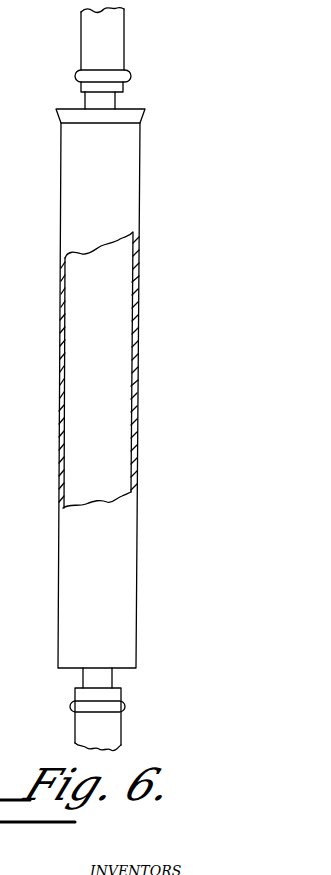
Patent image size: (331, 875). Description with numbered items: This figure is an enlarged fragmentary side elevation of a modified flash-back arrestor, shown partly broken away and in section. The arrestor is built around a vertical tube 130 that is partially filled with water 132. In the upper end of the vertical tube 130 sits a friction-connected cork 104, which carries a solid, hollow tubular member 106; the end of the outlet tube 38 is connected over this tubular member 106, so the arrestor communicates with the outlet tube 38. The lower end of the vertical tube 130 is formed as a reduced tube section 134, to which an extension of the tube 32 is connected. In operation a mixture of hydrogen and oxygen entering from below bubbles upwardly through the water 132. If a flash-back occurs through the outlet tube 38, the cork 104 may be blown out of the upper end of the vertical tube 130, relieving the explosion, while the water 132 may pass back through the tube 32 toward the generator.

The tube 32 is at (95, 725).
The outlet tube 38 is at (107, 47).
The cork 104 is at (142, 111).
The hollow tubular member 106 is at (93, 102).
The vertical tube 130 is at (137, 313).
The water 132 is at (102, 407).
The reduced tube section 134 is at (105, 674).